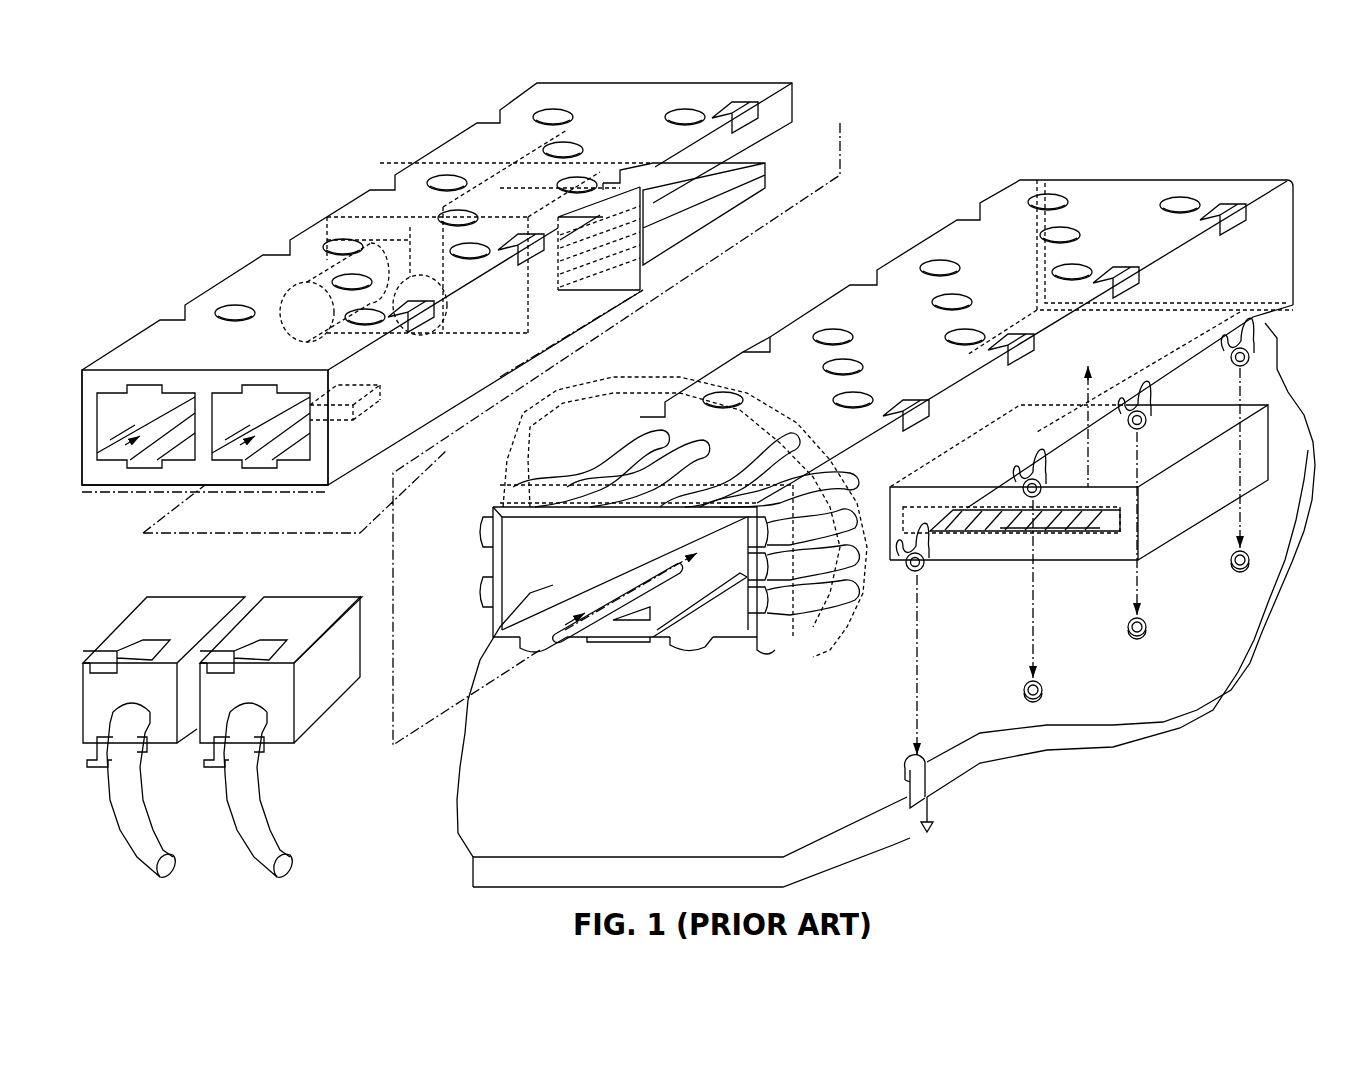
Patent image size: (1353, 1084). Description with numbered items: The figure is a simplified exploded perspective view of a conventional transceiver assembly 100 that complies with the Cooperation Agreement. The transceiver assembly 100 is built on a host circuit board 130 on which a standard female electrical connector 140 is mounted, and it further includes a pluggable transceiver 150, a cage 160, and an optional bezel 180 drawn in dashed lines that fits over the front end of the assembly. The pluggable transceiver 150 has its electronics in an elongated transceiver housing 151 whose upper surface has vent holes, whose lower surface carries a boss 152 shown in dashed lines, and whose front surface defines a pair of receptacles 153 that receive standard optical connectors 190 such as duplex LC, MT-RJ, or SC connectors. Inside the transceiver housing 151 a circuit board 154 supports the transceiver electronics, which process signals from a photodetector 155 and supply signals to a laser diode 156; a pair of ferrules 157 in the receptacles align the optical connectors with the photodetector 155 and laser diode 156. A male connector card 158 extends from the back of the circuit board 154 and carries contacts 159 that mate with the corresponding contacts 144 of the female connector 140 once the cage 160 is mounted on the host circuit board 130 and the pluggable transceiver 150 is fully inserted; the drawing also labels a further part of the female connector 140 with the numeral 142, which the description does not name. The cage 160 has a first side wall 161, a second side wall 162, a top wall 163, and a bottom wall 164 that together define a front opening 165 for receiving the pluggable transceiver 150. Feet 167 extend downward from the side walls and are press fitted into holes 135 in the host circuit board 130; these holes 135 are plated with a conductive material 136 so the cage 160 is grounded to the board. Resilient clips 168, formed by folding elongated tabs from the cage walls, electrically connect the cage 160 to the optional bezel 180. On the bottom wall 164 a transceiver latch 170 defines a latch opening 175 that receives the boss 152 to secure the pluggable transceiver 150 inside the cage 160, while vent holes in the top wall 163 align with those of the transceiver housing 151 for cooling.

The transceiver assembly 100 is at (163, 138).
The host circuit board 130 is at (853, 793).
The holes 135 is at (1238, 572).
The conductive material 136 is at (905, 762).
The female electrical connector 140 is at (1182, 506).
The connector contacts 142 is at (1080, 530).
The contacts 144 is at (993, 524).
The pluggable transceiver 150 is at (197, 275).
The transceiver housing 151 is at (165, 345).
The boss 152 is at (343, 447).
The receptacles 153 is at (222, 421).
The circuit board 154 is at (663, 223).
The photodetector 155 is at (548, 290).
The laser diode 156 is at (368, 215).
The ferrules 157 is at (423, 266).
The male connector card 158 is at (768, 180).
The contacts 159 is at (660, 227).
The cage 160 is at (948, 210).
The first side wall 161 is at (515, 547).
The second side wall 162 is at (897, 557).
The top wall 163 is at (757, 375).
The bottom wall 164 is at (563, 593).
The front opening 165 is at (1303, 210).
The feet 167 is at (1137, 425).
The resilient clips 168 is at (490, 524).
The transceiver latch 170 is at (573, 640).
The latch opening 175 is at (628, 622).
The bezel 180 is at (503, 450).
The optical connectors 190 is at (257, 627).